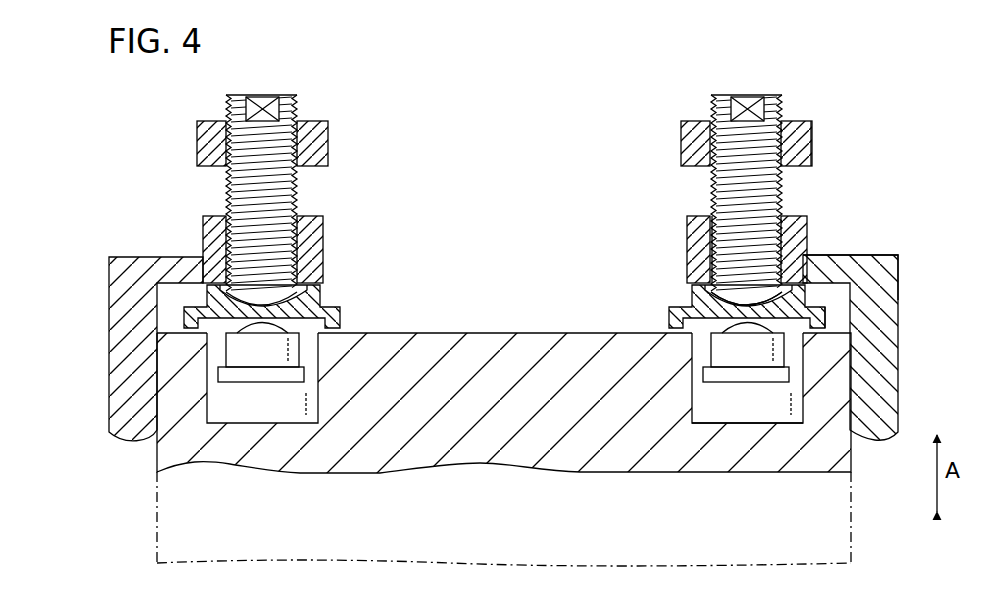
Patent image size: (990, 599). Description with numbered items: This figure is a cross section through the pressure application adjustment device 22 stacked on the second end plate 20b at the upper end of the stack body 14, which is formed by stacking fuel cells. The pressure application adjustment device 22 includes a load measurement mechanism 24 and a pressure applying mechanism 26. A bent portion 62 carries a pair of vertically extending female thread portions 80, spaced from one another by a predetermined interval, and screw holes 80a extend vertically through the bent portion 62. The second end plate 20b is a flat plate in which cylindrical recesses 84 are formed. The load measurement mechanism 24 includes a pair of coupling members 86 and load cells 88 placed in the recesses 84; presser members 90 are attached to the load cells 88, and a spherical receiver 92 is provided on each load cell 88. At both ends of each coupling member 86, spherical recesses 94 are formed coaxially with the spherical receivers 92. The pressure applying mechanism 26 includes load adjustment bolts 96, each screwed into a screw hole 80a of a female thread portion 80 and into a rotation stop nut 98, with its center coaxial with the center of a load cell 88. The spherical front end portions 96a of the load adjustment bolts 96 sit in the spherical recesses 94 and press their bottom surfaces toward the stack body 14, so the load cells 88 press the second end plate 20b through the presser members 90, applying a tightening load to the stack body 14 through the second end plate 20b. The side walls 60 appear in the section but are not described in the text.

The stack body 14 is at (157, 520).
The second end plate 20b is at (509, 329).
The pressure application adjustment device 22 is at (453, 75).
The load measurement mechanism 24 is at (795, 330).
The pressure applying mechanism 26 is at (831, 136).
The side wall 60 is at (105, 348).
The bent portion 62 is at (833, 262).
The female thread portion 80 is at (692, 239).
The screw hole 80a is at (728, 243).
The recess 84 is at (788, 421).
The coupling member 86 is at (329, 296).
The load cell 88 is at (745, 373).
The presser member 90 is at (770, 412).
The spherical receiver 92 is at (746, 326).
The spherical recess 94 is at (715, 272).
The load adjustment bolt 96 is at (288, 95).
The spherical front end portion 96a is at (736, 307).
The rotation stop nut 98 is at (323, 138).